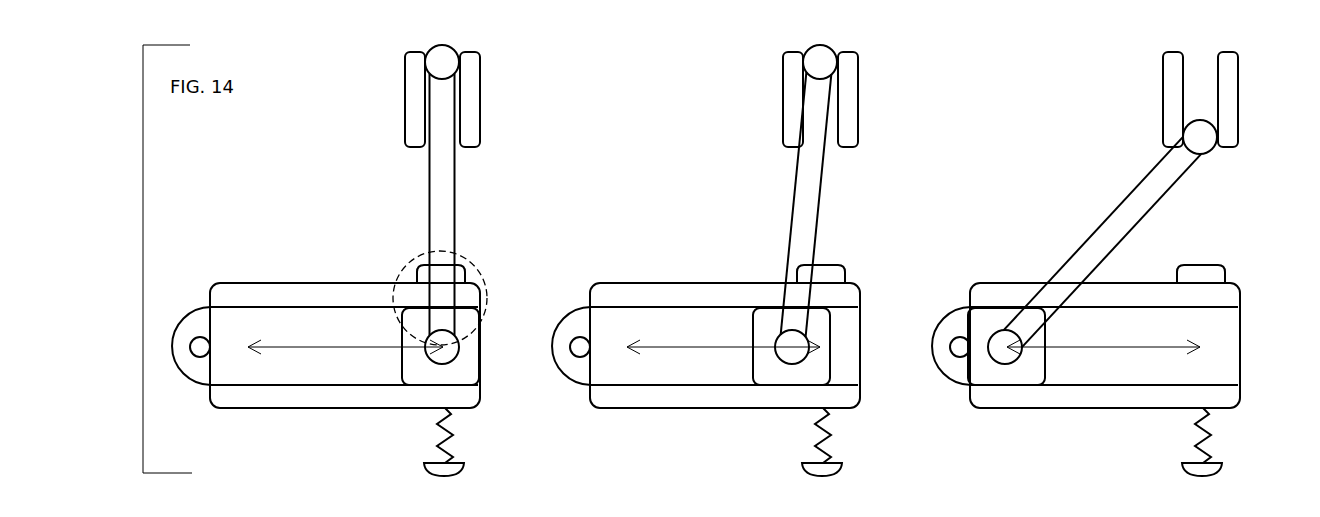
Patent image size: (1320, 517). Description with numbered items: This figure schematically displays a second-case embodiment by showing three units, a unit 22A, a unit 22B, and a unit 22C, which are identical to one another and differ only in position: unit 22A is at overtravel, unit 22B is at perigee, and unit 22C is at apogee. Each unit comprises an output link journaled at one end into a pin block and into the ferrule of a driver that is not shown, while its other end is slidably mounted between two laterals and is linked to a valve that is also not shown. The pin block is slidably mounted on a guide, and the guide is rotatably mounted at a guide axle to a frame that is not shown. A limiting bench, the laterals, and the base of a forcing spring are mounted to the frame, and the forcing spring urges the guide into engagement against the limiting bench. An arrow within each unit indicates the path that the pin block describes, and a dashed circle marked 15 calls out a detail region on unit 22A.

The detail region shown in FIG. 15 is at (412, 263).
The unit 22A is at (340, 240).
The unit 22B is at (697, 223).
The unit 22C is at (1100, 222).